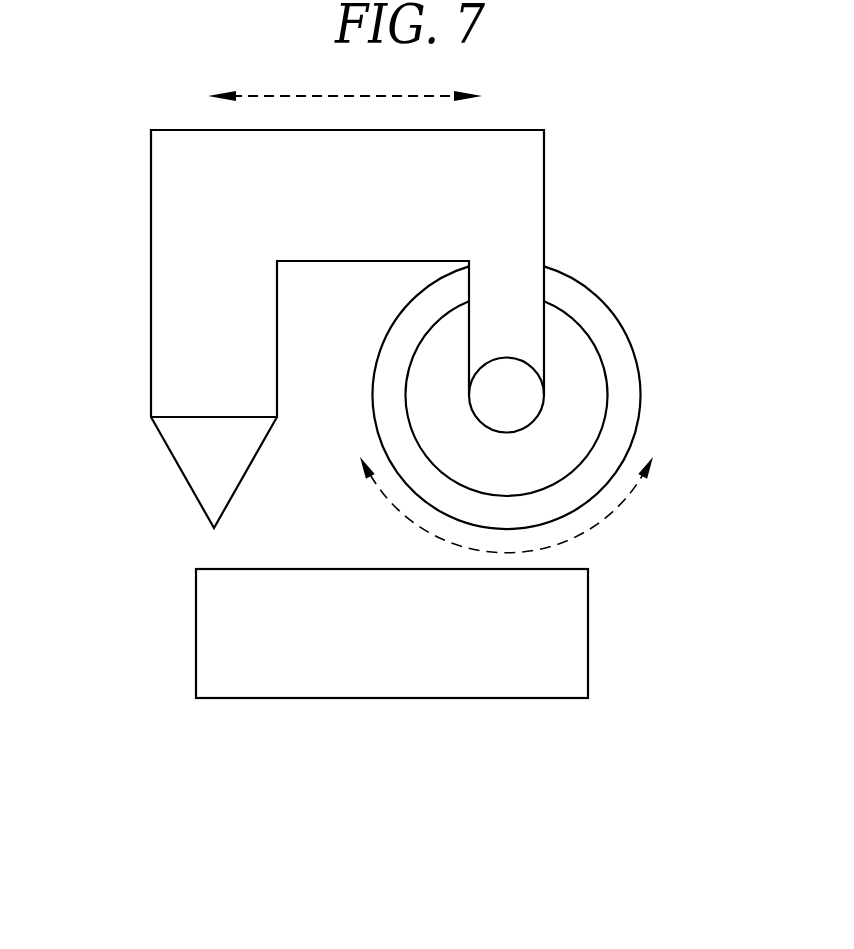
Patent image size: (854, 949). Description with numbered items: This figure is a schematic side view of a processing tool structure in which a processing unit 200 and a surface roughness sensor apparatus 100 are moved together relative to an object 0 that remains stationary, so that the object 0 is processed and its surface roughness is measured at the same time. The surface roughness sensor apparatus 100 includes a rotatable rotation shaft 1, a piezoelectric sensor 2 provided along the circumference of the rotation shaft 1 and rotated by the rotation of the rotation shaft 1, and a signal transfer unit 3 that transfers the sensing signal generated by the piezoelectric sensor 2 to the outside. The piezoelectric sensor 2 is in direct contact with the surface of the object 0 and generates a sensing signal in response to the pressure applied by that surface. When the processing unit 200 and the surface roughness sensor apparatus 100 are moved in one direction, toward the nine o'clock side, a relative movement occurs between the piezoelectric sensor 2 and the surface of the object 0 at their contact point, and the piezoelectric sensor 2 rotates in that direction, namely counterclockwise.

The object 0 is at (389, 658).
The rotation shaft 1 is at (516, 398).
The piezoelectric sensor 2 is at (617, 437).
The signal transfer unit 3 is at (582, 393).
The surface roughness sensor apparatus 100 is at (547, 372).
The processing unit 200 is at (198, 448).